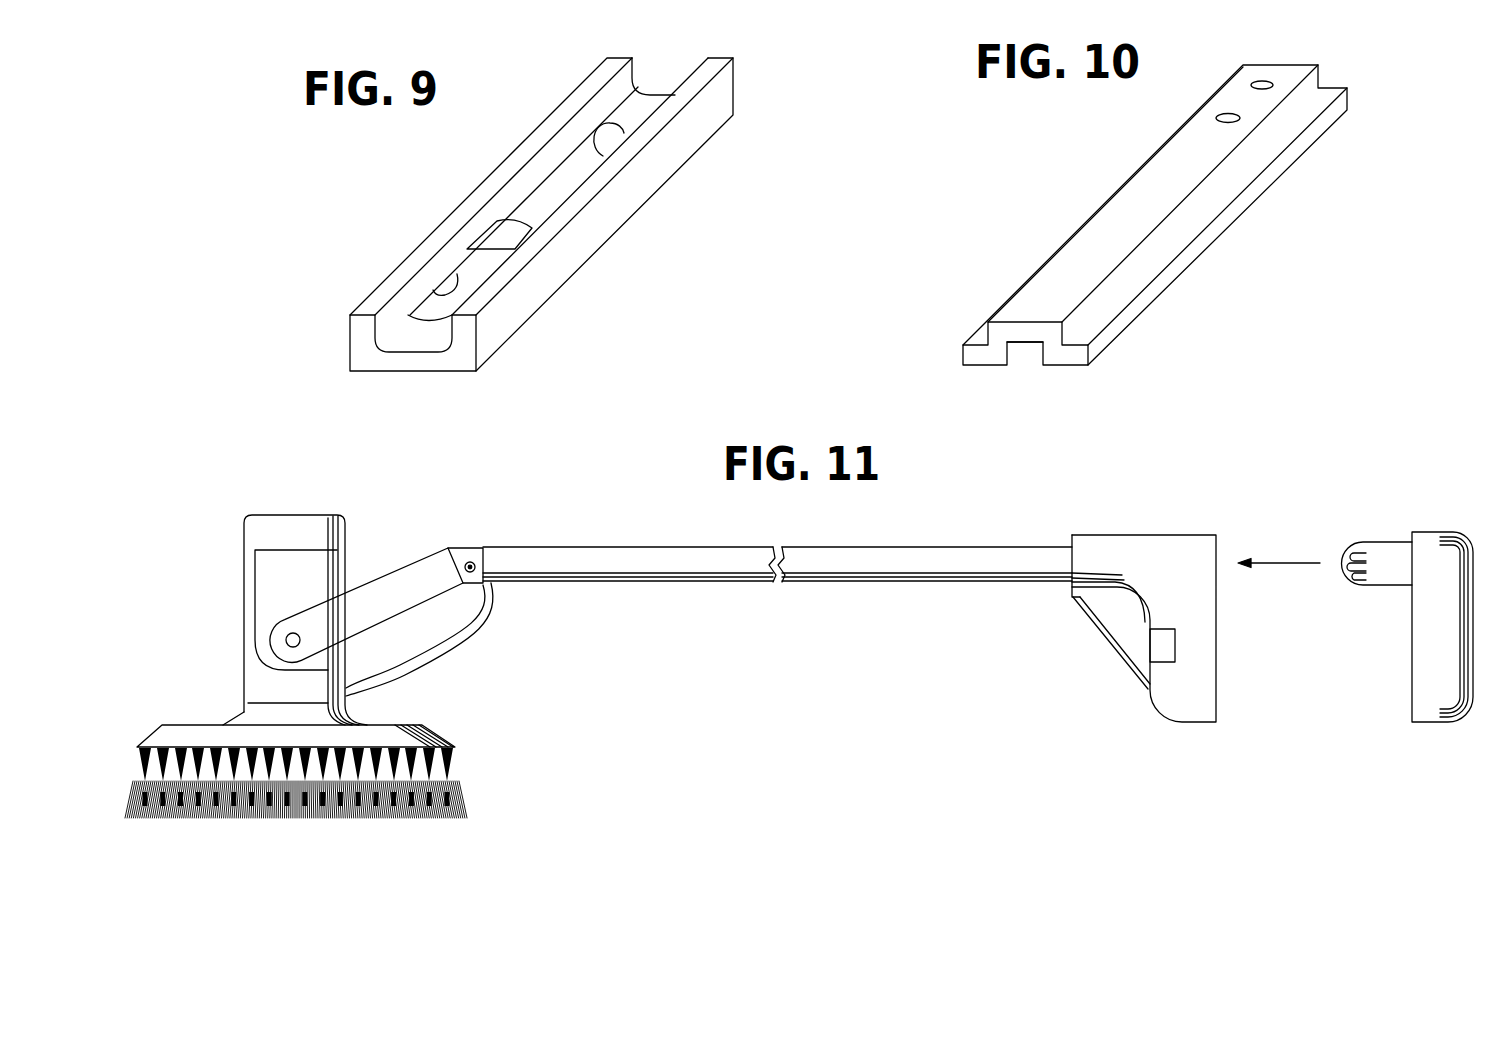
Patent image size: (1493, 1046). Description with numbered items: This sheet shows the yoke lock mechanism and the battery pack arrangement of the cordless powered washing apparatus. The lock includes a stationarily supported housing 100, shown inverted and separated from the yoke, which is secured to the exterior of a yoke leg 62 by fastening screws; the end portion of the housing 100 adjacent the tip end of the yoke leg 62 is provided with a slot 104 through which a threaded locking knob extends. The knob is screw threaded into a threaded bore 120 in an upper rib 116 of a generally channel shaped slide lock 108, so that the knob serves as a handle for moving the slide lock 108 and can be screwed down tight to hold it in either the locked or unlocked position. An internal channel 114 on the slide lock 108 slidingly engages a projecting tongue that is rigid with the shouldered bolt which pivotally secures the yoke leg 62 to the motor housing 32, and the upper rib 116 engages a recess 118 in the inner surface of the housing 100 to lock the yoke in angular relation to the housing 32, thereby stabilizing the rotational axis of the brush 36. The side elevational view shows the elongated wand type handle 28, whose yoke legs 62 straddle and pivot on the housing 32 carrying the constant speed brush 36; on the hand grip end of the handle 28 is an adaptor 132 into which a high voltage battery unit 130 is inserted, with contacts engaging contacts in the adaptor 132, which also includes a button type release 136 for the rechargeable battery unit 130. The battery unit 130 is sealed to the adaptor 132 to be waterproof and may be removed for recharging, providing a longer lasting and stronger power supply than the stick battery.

In FIG. 11, the wand type handle 28 is at (517, 533).
In FIG. 11, the housing 32 is at (226, 562).
In FIG. 11, the brush 36 is at (410, 706).
In FIG. 11, the yoke leg 62 is at (400, 586).
In FIG. 9, the housing 100 is at (513, 307).
In FIG. 9, the slot 104 is at (457, 274).
In FIG. 10, the slide lock 108 is at (1112, 244).
In FIG. 10, the internal channel 114 is at (1037, 352).
In FIG. 10, the upper rib 116 is at (1037, 288).
In FIG. 9, the recess 118 is at (620, 127).
In FIG. 10, the threaded bore 120 is at (1225, 123).
In FIG. 11, the high voltage battery unit 130 is at (1442, 512).
In FIG. 11, the adaptor 132 is at (1137, 547).
In FIG. 11, the button type release 136 is at (1157, 647).